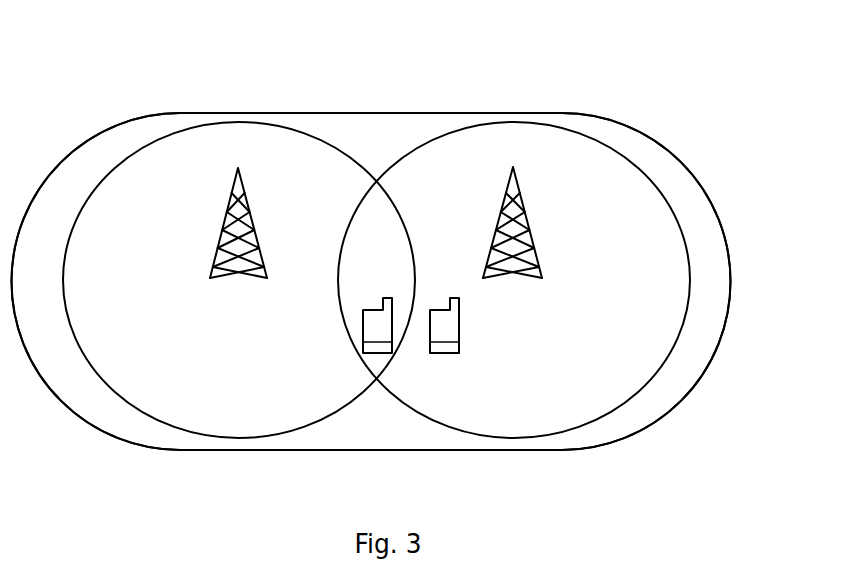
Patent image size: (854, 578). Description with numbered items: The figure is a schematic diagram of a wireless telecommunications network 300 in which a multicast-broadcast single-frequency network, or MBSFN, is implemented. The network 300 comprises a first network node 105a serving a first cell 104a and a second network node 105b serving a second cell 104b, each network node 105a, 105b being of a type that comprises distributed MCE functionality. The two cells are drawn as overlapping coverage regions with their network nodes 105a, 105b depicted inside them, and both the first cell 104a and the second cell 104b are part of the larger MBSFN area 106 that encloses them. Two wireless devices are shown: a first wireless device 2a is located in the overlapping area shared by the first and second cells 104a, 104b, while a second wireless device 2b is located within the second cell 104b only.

The wireless telecommunications network 300 is at (672, 109).
The MBSFN area 106 is at (705, 368).
The first cell 104a is at (132, 407).
The second cell 104b is at (632, 398).
The first network node 105a is at (232, 196).
The second network node 105b is at (507, 196).
The first wireless device 2a is at (377, 325).
The second wireless device 2b is at (444, 325).